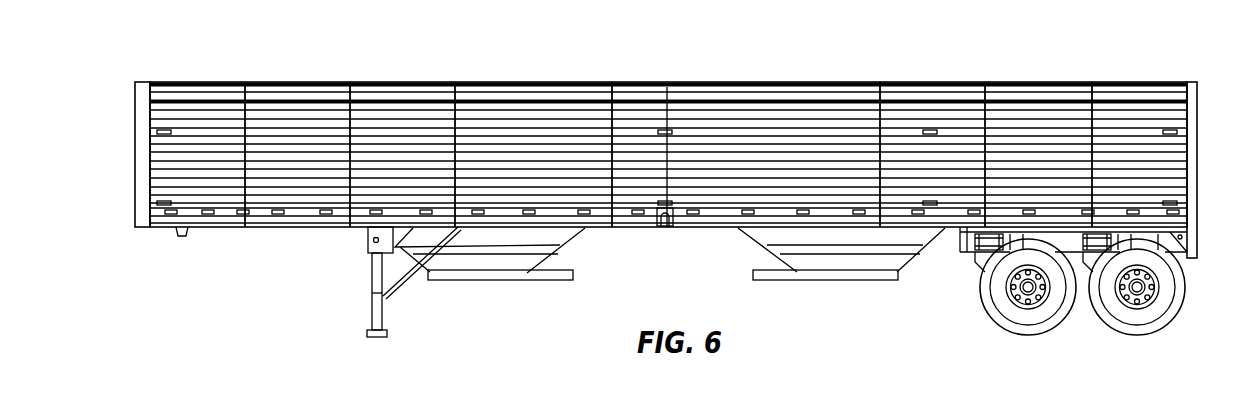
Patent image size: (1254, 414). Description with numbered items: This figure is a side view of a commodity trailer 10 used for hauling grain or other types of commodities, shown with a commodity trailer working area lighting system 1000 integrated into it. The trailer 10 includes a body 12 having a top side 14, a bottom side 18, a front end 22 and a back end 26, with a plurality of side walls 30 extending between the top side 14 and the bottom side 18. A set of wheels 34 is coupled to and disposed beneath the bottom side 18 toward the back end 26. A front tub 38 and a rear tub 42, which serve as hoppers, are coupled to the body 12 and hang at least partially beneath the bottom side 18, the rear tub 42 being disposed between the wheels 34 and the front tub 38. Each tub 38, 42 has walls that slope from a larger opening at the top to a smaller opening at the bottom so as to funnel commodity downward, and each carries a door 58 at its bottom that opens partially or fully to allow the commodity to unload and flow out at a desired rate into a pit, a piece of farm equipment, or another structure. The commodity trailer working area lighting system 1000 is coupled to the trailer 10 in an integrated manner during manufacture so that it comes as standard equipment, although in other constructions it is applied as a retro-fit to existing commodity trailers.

The commodity trailer 10 is at (202, 51).
The body 12 is at (312, 110).
The top side 14 is at (478, 82).
The bottom side 18 is at (228, 232).
The front end 22 is at (135, 122).
The back end 26 is at (1196, 118).
The side walls 30 is at (540, 112).
The wheels 34 is at (1127, 328).
The front tub 38 is at (497, 258).
The rear tub 42 is at (853, 258).
The door 58 is at (556, 282).
The commodity trailer working area lighting system 1000 is at (745, 258).